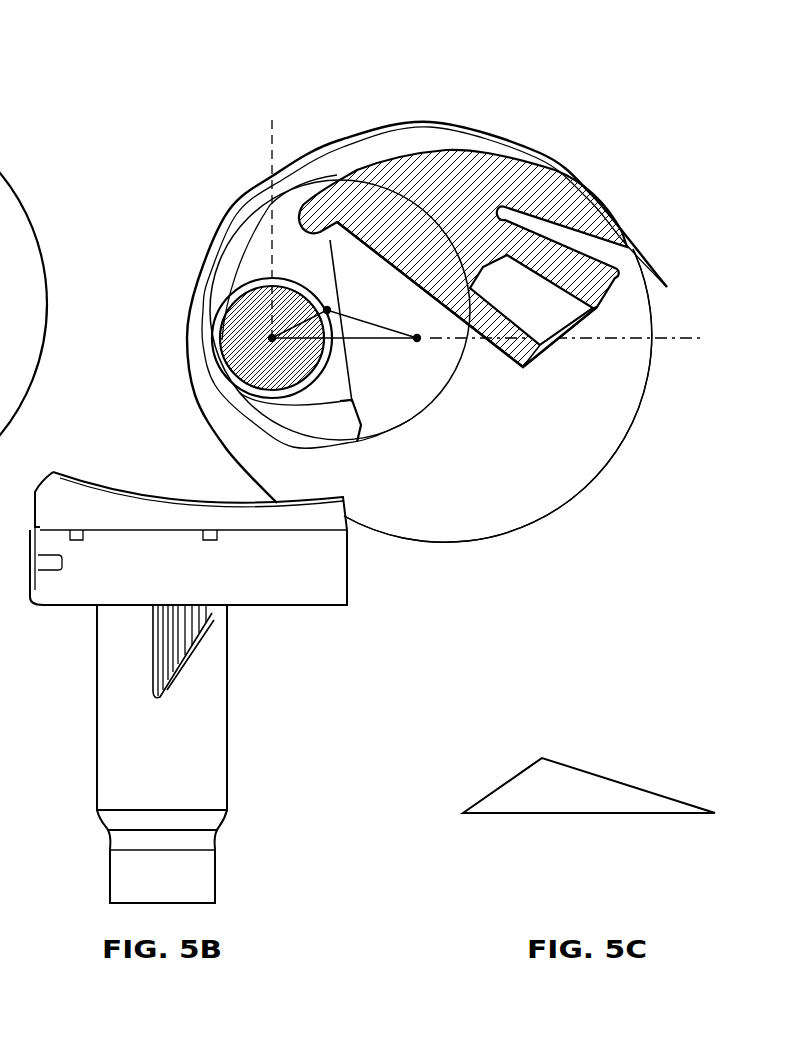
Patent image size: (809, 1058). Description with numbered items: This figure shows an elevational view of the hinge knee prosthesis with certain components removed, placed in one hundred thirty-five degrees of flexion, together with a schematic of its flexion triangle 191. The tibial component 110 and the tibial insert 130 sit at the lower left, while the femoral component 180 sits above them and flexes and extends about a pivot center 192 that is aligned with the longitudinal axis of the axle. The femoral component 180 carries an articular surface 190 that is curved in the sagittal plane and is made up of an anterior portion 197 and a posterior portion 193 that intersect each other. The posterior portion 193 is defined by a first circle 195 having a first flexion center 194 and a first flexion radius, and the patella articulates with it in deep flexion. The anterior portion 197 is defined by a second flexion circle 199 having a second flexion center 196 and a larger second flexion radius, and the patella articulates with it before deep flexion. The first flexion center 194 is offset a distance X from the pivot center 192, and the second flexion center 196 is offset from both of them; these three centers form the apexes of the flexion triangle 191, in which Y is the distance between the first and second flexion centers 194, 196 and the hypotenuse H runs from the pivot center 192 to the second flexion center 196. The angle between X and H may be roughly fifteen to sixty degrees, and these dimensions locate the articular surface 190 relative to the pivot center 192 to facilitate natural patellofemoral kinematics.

In FIG. 5B, the tibial component 110 is at (268, 720).
In FIG. 5B, the tibial insert 130 is at (96, 476).
In FIG. 5B, the femoral component 180 is at (463, 420).
In FIG. 5B, the articular surface 190 is at (403, 281).
In FIG. 5B, the flexion triangle 191 is at (353, 304).
In FIG. 5C, the flexion triangle 191 is at (645, 712).
In FIG. 5C, the pivot center 192 is at (463, 813).
In FIG. 5B, the posterior portion 193 is at (200, 256).
In FIG. 5C, the first flexion center 194 is at (543, 757).
In FIG. 5B, the first circle 195 is at (373, 442).
In FIG. 5C, the second flexion center 196 is at (716, 813).
In FIG. 5B, the anterior portion 197 is at (432, 120).
In FIG. 5B, the second flexion circle 199 is at (584, 484).